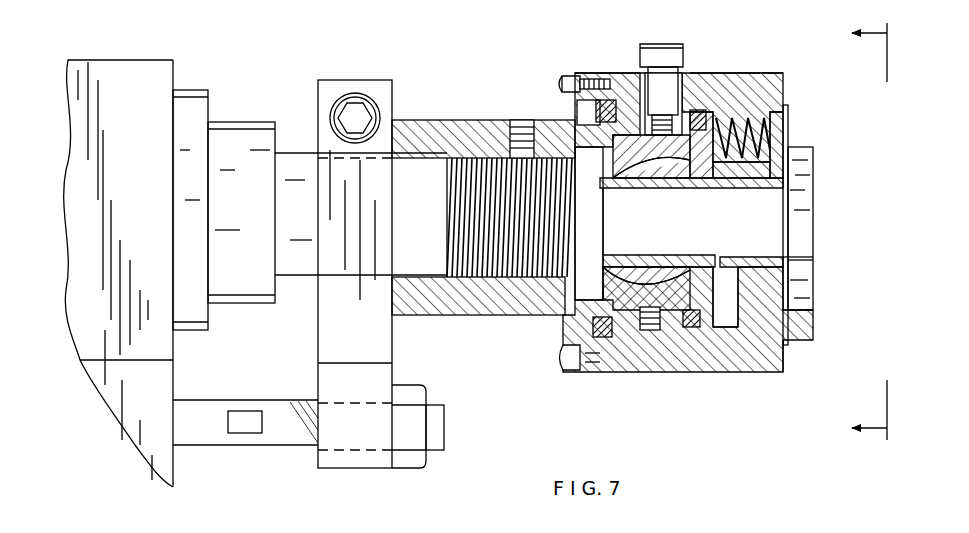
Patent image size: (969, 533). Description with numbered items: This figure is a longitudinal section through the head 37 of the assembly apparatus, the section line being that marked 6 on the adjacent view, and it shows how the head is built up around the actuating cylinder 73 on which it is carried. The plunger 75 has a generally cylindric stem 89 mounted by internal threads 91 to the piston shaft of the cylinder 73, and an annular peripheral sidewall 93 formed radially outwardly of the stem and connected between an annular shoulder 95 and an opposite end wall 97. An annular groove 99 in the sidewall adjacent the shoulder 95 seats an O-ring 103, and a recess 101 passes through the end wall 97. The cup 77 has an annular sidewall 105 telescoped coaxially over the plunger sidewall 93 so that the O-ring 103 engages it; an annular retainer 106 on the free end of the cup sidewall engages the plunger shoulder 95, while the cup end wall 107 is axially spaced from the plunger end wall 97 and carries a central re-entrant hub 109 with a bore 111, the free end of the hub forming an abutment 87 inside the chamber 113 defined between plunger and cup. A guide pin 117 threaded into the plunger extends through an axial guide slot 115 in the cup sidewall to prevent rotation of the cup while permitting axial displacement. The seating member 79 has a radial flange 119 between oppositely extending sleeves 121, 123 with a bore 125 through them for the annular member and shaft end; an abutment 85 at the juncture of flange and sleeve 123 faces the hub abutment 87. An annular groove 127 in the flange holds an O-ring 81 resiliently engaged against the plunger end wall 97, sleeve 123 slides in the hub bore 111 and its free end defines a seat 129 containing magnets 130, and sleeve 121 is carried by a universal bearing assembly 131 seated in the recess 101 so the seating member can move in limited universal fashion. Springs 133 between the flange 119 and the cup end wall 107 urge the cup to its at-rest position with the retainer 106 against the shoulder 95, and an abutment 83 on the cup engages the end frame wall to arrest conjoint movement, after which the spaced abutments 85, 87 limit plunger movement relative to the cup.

The actuating cylinder 73 is at (190, 88).
The plunger 75 is at (472, 122).
The cup 77 is at (783, 76).
The seating member 79 is at (618, 200).
The O-ring 81 is at (715, 372).
The abutment 83 is at (805, 320).
The abutment 85 is at (703, 180).
The abutment 87 is at (720, 178).
The stem 89 is at (436, 300).
The internal threads 91 is at (478, 300).
The peripheral sidewall 93 is at (650, 335).
The annular shoulder 95 is at (565, 340).
The end wall 97 is at (688, 345).
The annular groove 99 is at (562, 123).
The recess 101 is at (630, 120).
The O-ring 103 is at (595, 362).
The annular sidewall 105 is at (580, 73).
The annular retainer 106 is at (565, 75).
The end wall 107 is at (783, 80).
The re-entrant hub 109 is at (800, 170).
The bore 111 is at (795, 290).
The chamber 113 is at (783, 360).
The guide slot 115 is at (700, 90).
The guide pin 117 is at (660, 50).
The flange 119 is at (760, 372).
The sleeve 121 is at (603, 262).
The sleeve 123 is at (790, 210).
The bore 125 is at (665, 262).
The annular groove 127 is at (725, 372).
The seat 129 is at (785, 262).
The magnets 130 is at (760, 258).
The universal bearing assembly 131 is at (600, 170).
The springs 133 is at (775, 127).
The head 37 is at (560, 378).
The section line 6 is at (859, 231).